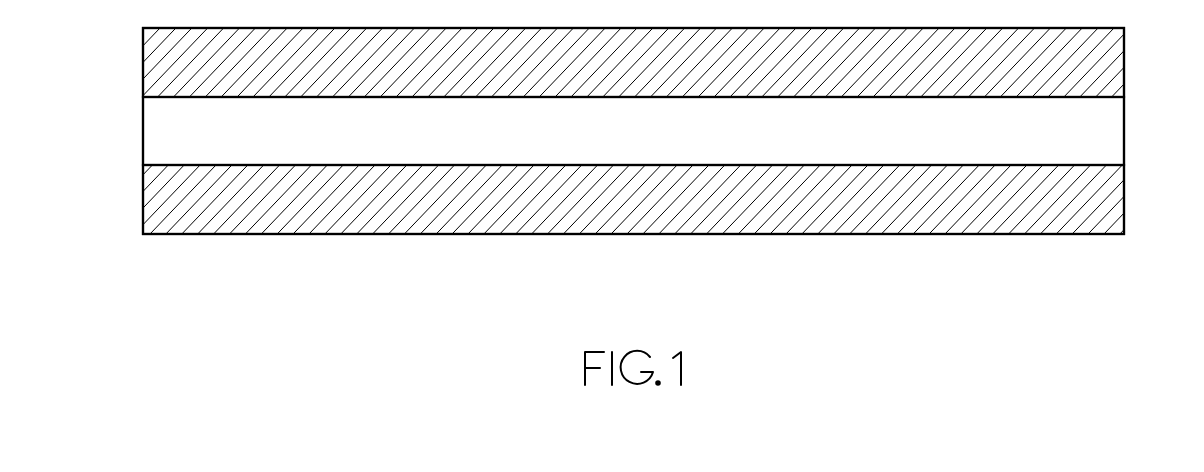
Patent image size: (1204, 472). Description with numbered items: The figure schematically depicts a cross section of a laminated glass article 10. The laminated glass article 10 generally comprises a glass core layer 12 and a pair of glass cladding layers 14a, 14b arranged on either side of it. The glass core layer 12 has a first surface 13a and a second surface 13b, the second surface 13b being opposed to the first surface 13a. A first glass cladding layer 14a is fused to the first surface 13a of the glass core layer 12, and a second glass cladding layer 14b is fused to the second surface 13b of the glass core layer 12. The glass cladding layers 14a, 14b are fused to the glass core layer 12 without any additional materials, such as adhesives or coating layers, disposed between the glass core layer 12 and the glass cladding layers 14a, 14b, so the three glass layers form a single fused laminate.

The laminated glass article 10 is at (140, 4).
The glass core layer 12 is at (1124, 138).
The first surface 13a is at (313, 95).
The second surface 13b is at (553, 168).
The first glass cladding layer 14a is at (1124, 63).
The second glass cladding layer 14b is at (1124, 208).